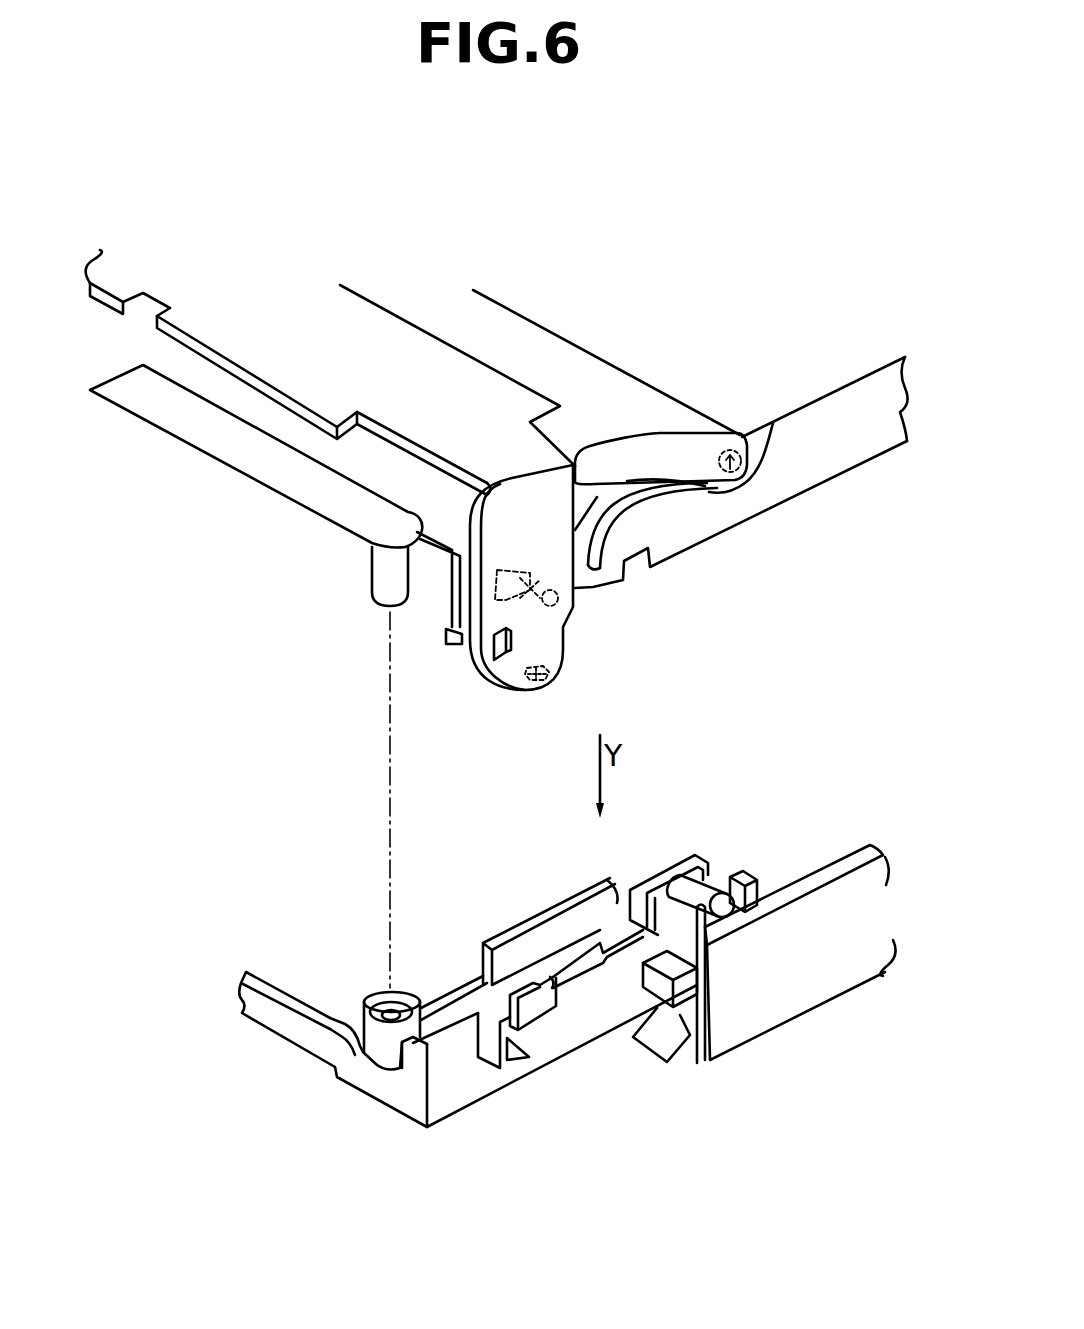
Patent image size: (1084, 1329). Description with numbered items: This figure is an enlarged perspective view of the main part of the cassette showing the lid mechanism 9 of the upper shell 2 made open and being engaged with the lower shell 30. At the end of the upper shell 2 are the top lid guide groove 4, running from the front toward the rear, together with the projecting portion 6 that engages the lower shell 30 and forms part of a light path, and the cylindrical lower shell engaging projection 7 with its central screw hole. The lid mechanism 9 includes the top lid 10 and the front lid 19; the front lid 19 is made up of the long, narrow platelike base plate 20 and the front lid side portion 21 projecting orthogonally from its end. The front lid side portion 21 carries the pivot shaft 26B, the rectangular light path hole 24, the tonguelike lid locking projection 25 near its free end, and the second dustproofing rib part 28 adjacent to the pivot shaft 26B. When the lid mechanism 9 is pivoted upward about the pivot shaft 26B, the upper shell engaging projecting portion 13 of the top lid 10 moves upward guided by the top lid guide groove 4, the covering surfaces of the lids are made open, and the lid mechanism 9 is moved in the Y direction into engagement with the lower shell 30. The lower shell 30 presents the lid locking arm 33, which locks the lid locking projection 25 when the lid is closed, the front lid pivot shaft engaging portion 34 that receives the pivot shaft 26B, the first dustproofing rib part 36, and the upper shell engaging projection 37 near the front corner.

The upper shell 2 is at (806, 384).
The top lid guide groove 4 is at (703, 485).
The projecting portion 6 is at (441, 632).
The lower shell engaging projection 7 is at (380, 573).
The lid mechanism 9 is at (360, 668).
The top lid 10 is at (637, 397).
The upper shell engaging projecting portion 13 is at (733, 450).
The front lid 19 is at (440, 337).
The base plate 20 is at (343, 343).
The front lid side portion 21 is at (524, 705).
The light path hole 24 is at (507, 641).
The lid locking projection 25 is at (560, 668).
The pivot shaft 26B is at (577, 607).
The second dustproofing rib part 28 is at (493, 603).
The lower shell 30 is at (869, 998).
The lid locking arm 33 is at (750, 1018).
The front lid pivot shaft engaging portion 34 is at (550, 992).
The first dustproofing rib part 36 is at (504, 1100).
The upper shell engaging projection 37 is at (380, 1047).